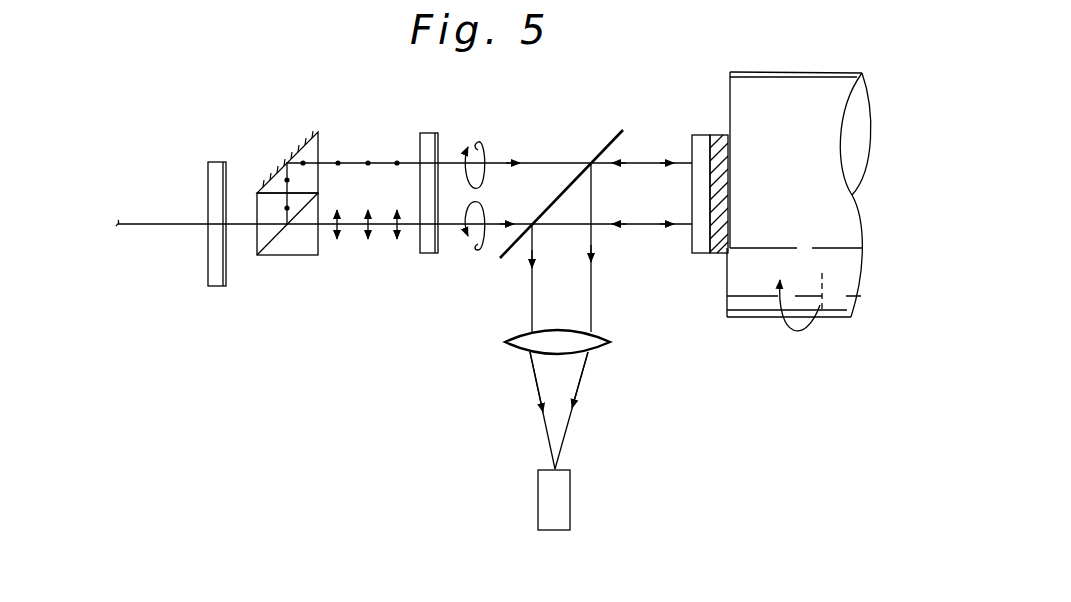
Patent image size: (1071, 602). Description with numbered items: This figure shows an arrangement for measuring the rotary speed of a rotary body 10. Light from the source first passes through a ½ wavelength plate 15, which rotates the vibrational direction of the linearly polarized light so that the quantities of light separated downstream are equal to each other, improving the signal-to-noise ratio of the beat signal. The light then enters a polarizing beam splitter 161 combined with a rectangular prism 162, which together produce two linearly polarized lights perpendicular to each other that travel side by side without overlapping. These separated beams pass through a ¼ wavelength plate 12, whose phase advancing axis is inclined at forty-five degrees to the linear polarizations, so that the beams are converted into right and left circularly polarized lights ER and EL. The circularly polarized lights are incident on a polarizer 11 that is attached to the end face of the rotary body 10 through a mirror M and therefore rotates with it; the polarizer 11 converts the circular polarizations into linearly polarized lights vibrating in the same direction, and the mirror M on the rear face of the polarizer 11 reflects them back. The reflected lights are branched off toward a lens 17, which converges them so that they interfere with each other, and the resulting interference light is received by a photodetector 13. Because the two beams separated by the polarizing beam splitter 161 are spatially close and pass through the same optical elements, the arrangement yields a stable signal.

The rotary body 10 is at (780, 82).
The polarizer 11 is at (695, 148).
The mirror M is at (720, 135).
The ¼ wavelength plate 12 is at (428, 135).
The photodetector 13 is at (568, 483).
The ½ wavelength plate 15 is at (215, 162).
The lens 17 is at (522, 346).
The polarizing beam splitter 161 is at (302, 256).
The rectangular prism 162 is at (311, 147).
The left circularly polarized light EL is at (482, 143).
The right circularly polarized light ER is at (470, 253).